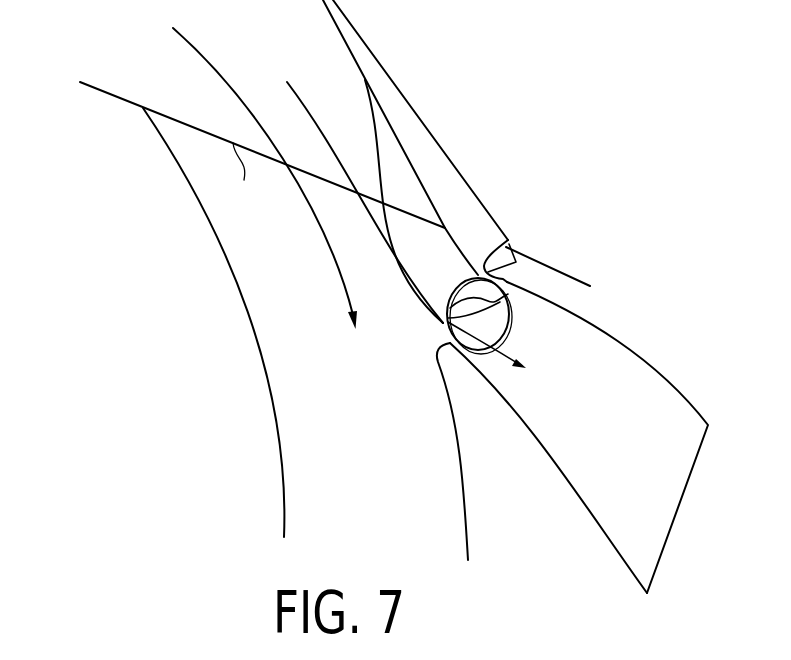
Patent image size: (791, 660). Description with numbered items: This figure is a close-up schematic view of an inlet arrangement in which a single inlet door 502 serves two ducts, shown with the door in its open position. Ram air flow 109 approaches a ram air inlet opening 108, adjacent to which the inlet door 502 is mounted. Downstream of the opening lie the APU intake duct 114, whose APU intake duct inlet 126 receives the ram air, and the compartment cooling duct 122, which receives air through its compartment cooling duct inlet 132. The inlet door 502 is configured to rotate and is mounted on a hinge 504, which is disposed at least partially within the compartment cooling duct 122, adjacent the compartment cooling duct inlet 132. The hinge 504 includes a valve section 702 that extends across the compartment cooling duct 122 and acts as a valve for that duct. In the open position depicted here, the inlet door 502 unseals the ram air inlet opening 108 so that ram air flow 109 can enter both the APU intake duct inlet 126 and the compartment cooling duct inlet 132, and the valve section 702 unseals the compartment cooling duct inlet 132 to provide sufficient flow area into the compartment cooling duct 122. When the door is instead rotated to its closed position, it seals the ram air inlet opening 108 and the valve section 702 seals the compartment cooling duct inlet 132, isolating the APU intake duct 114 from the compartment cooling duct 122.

The ram air inlet opening 108 is at (175, 117).
The ram air flow 109 is at (300, 100).
The APU intake duct 114 is at (280, 457).
The APU intake duct inlet 126 is at (243, 175).
The inlet door 502 is at (370, 52).
The hinge 504 is at (505, 239).
The compartment cooling duct inlet 132 is at (512, 313).
The compartment cooling duct 122 is at (652, 360).
The valve section 702 is at (480, 307).